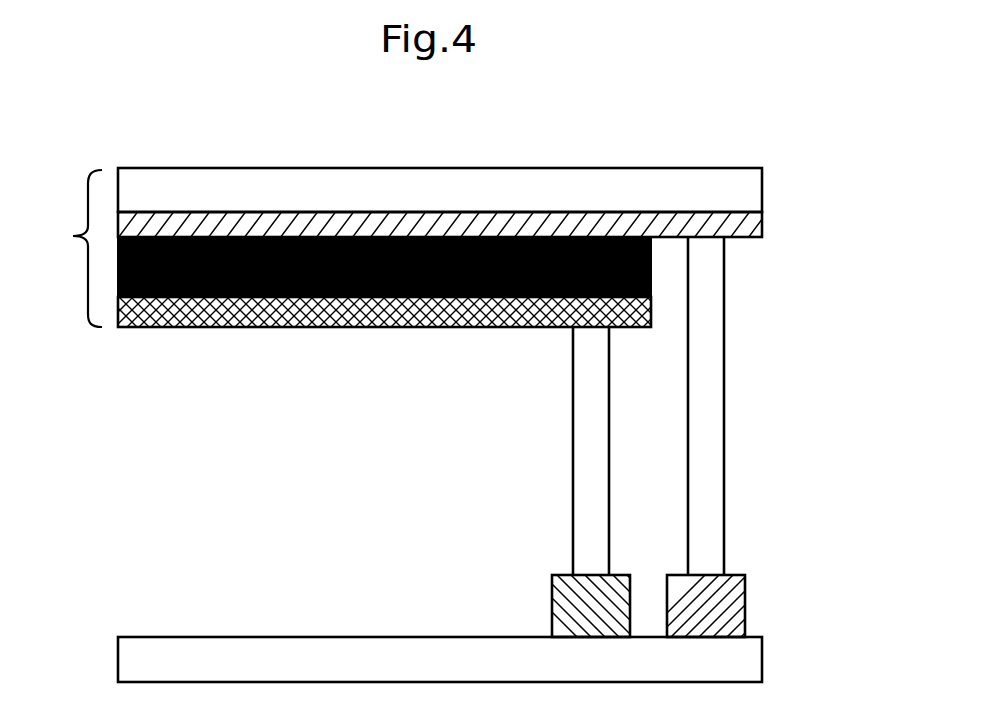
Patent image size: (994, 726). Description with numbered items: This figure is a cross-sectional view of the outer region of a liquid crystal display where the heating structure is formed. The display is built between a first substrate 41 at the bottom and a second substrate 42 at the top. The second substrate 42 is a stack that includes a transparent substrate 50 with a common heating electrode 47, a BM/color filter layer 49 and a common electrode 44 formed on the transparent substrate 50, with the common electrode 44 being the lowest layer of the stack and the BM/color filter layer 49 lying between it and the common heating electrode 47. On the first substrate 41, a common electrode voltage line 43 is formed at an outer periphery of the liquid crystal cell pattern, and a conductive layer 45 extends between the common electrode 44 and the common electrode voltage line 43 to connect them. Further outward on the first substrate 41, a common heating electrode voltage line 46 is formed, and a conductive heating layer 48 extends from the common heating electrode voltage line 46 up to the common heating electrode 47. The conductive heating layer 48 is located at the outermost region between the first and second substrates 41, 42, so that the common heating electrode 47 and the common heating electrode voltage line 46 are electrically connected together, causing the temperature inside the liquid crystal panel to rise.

The first substrate 41 is at (762, 660).
The second substrate 42 is at (68, 248).
The common electrode voltage line 43 is at (568, 612).
The common electrode 44 is at (375, 328).
The conductive layer 45 is at (573, 512).
The common heating electrode voltage line 46 is at (730, 607).
The common heating electrode 47 is at (762, 222).
The conductive heating layer 48 is at (715, 373).
The BM/color filter layer 49 is at (651, 267).
The transparent substrate 50 is at (762, 188).